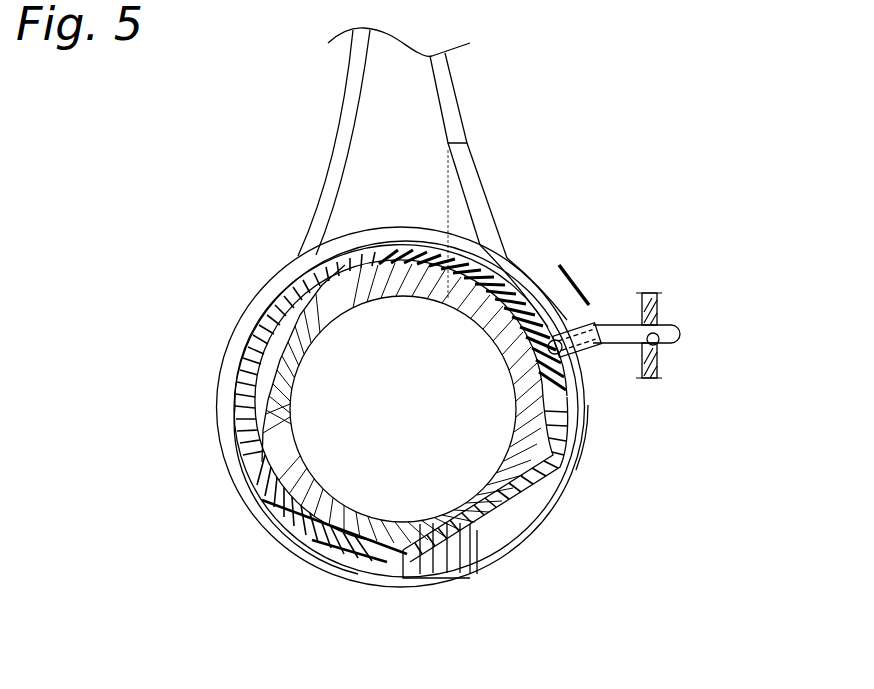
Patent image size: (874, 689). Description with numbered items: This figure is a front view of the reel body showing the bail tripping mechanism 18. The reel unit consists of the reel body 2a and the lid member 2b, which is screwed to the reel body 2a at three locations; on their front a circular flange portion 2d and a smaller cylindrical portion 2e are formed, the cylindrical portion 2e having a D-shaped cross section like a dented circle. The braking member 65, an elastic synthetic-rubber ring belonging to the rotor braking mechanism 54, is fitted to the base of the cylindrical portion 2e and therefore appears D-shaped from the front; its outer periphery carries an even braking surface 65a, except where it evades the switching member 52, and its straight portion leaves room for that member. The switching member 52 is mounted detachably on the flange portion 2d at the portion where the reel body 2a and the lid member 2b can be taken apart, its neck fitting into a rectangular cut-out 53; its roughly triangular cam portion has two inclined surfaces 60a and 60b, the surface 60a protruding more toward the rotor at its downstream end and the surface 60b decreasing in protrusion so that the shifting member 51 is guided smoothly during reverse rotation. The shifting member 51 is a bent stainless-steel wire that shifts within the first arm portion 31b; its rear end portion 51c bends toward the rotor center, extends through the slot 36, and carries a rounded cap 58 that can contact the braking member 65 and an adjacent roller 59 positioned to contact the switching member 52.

The reel body 2a is at (312, 206).
The lid member 2b is at (480, 181).
The flange portion 2d is at (298, 548).
The cylindrical portion 2e is at (247, 463).
The bail tripping mechanism 18 is at (635, 302).
The first arm portion 31b is at (658, 380).
The slot 36 is at (665, 345).
The shifting member 51 is at (680, 326).
The rear end portion 51c is at (608, 326).
The switching member 52 is at (503, 530).
The cut-out 53 is at (453, 577).
The rotor braking mechanism 54 is at (589, 411).
The cap 58 is at (568, 358).
The roller 59 is at (563, 318).
The inclined surface 60a is at (490, 540).
The inclined surface 60b is at (435, 570).
The braking member 65 is at (247, 377).
The braking surface 65a is at (567, 447).